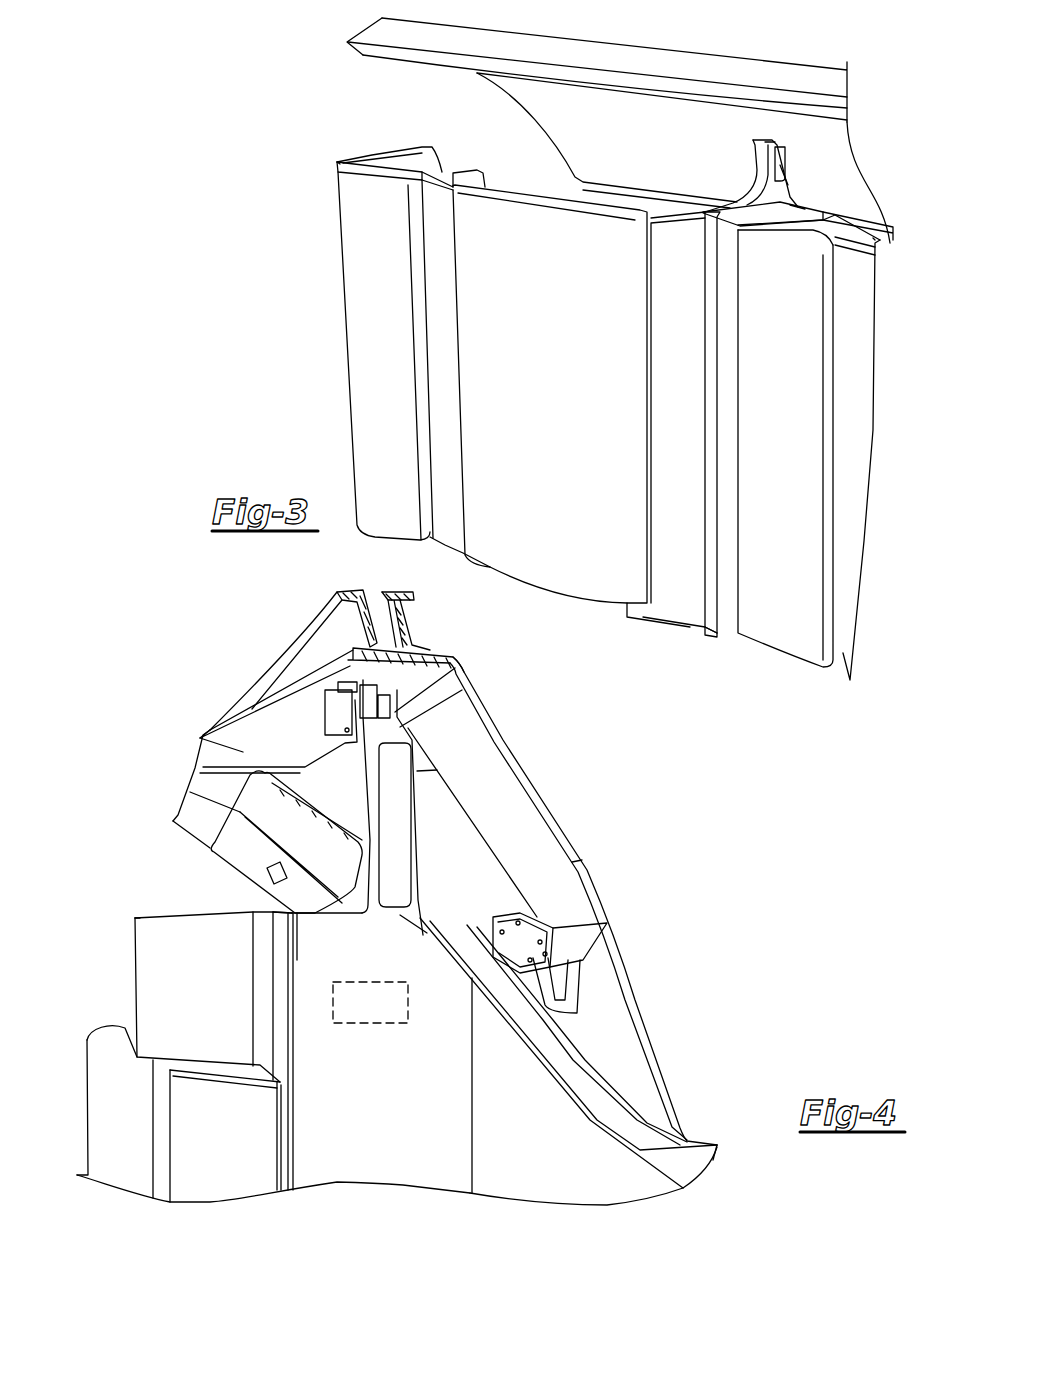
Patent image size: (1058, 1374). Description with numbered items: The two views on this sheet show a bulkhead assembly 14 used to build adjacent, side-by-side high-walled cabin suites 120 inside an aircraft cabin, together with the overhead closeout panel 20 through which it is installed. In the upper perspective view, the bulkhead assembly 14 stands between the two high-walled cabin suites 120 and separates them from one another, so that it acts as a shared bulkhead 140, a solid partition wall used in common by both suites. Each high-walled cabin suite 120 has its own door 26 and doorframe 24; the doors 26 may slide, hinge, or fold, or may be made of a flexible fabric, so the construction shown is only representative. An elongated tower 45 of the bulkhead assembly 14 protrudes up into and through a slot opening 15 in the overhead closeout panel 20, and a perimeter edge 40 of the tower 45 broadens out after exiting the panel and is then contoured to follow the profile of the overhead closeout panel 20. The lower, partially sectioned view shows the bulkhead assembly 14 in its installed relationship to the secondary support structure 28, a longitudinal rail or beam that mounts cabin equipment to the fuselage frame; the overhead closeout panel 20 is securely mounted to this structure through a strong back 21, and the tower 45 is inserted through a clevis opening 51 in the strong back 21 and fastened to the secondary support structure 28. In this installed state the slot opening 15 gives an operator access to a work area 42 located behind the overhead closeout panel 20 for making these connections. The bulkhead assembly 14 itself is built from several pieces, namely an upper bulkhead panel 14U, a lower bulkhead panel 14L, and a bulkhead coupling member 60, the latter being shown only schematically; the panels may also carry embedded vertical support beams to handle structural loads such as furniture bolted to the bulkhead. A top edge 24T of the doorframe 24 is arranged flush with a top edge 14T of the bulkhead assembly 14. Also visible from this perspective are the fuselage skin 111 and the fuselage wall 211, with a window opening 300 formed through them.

In FIG. 3, the bulkhead assembly 14 is at (722, 613).
In FIG. 4, the bulkhead assembly 14 is at (447, 1125).
In FIG. 4, the lower bulkhead panel 14L is at (362, 1160).
In FIG. 4, the top edge 14T is at (287, 907).
In FIG. 4, the upper bulkhead panel 14U is at (353, 907).
In FIG. 3, the slot opening 15 is at (780, 155).
In FIG. 4, the slot opening 15 is at (318, 914).
In FIG. 3, the overhead closeout panel 20 is at (665, 150).
In FIG. 4, the overhead closeout panel 20 is at (235, 840).
In FIG. 4, the strong back 21 is at (290, 745).
In FIG. 3, the doorframe 24 is at (386, 345).
In FIG. 4, the doorframe 24 is at (205, 999).
In FIG. 4, the top edge 24T is at (137, 905).
In FIG. 3, the door 26 is at (537, 372).
In FIG. 4, the secondary support structure 28 is at (297, 640).
In FIG. 3, the perimeter edge 40 is at (803, 184).
In FIG. 4, the work area 42 is at (200, 791).
In FIG. 3, the tower 45 is at (762, 156).
In FIG. 4, the tower 45 is at (392, 846).
In FIG. 4, the clevis opening 51 is at (450, 670).
In FIG. 4, the bulkhead coupling member 60 is at (370, 1002).
In FIG. 4, the fuselage skin 111 is at (585, 830).
In FIG. 3, the high-walled cabin suites 120 is at (355, 118).
In FIG. 3, the shared bulkhead 140 is at (797, 208).
In FIG. 4, the fuselage wall 211 is at (573, 833).
In FIG. 4, the window opening 300 is at (563, 987).